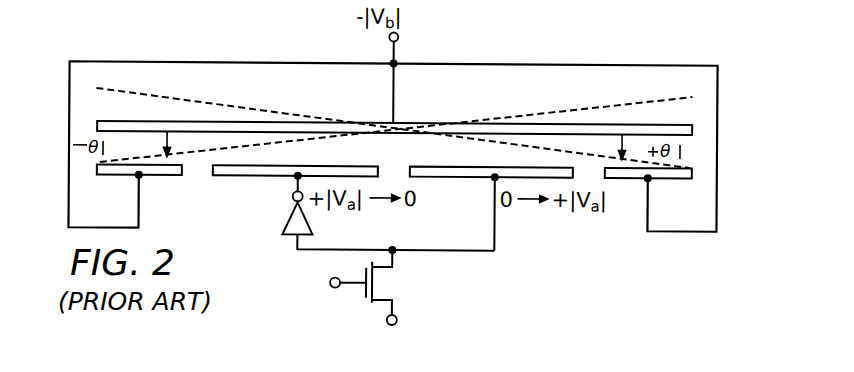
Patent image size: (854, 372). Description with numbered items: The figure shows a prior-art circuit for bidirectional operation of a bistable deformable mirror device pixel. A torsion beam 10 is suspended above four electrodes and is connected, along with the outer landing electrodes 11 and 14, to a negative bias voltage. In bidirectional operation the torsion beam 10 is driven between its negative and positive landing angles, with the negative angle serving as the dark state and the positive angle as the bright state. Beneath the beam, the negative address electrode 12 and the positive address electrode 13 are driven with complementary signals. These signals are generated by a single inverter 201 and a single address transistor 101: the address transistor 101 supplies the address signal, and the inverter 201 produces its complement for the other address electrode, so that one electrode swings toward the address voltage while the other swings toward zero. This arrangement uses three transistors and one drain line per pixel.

The torsion beam 10 is at (508, 122).
The landing electrode 11 is at (157, 177).
The negative address electrode 12 is at (255, 177).
The positive address electrode 13 is at (450, 178).
The landing electrode 14 is at (665, 179).
The address transistor 101 is at (378, 284).
The inverter 201 is at (288, 238).